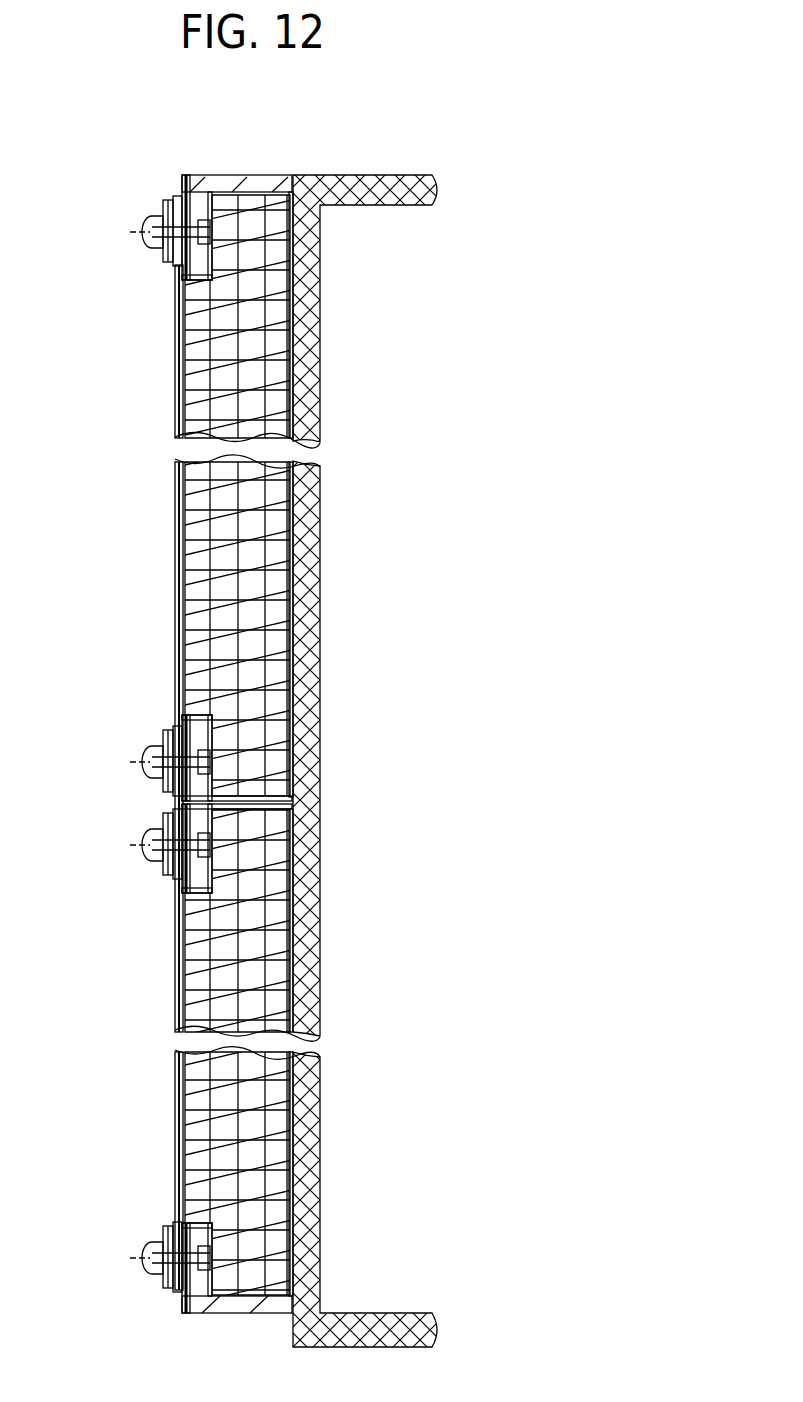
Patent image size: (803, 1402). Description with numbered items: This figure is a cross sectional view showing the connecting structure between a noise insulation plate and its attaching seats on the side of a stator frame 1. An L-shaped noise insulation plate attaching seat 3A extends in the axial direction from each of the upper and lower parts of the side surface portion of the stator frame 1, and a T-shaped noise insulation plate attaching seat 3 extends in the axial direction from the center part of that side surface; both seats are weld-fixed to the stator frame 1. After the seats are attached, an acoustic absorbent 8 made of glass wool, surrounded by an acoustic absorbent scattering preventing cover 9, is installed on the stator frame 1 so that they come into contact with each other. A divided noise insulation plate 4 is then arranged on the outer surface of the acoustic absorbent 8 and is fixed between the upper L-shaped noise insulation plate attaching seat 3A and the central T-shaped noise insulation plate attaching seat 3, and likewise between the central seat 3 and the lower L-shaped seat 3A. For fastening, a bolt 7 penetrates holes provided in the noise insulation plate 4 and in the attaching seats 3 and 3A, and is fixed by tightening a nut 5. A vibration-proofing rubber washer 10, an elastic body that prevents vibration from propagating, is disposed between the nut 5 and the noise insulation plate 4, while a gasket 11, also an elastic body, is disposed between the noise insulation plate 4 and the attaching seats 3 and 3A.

The stator frame 1 is at (383, 183).
The T-shaped noise insulation plate attaching seat 3 is at (250, 801).
The L-shaped noise insulation plate attaching seat 3A is at (252, 185).
The noise insulation plate 4 is at (178, 505).
The nut 5 is at (145, 238).
The bolt 7 is at (320, 297).
The acoustic absorbent 8 is at (258, 368).
The acoustic absorbent scattering preventing cover 9 is at (297, 253).
The vibration-proofing rubber washer 10 is at (168, 198).
The gasket 11 is at (177, 265).